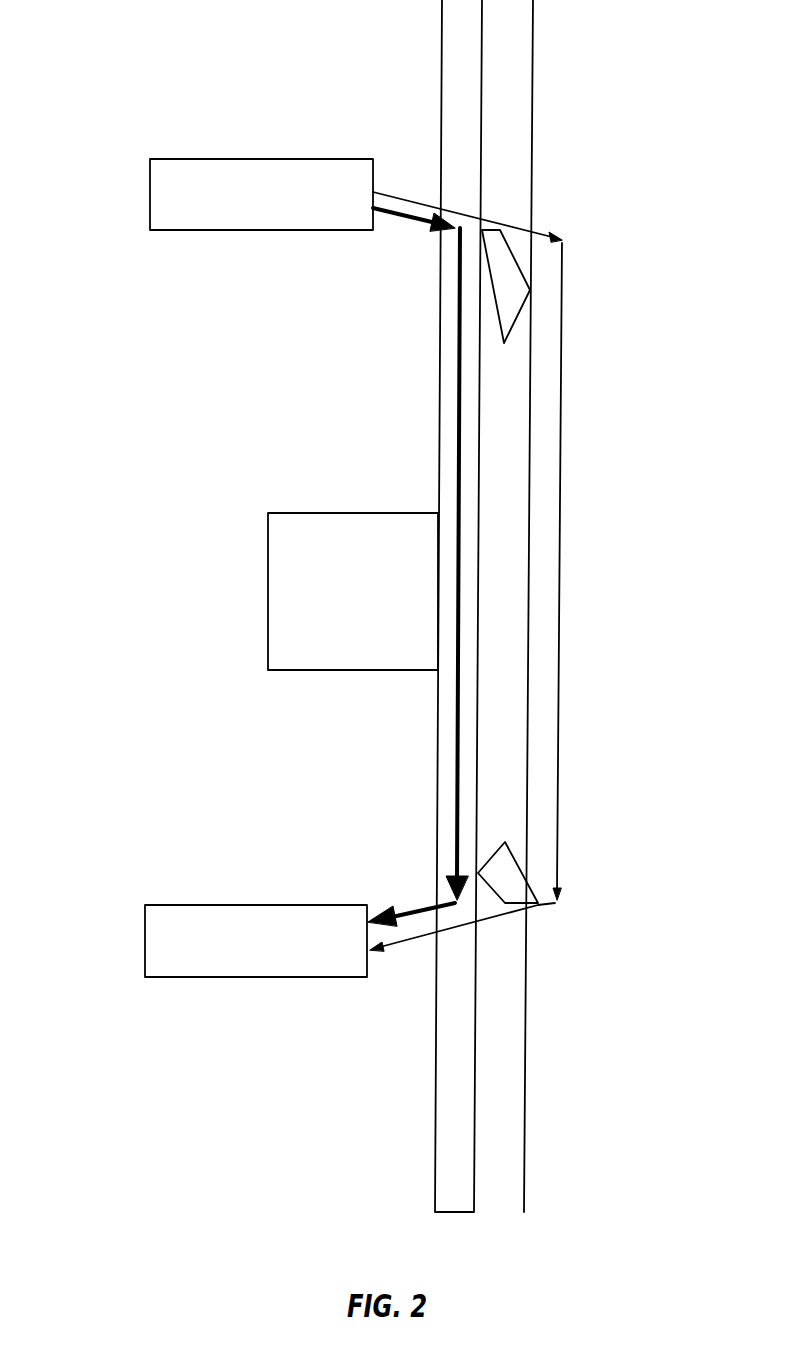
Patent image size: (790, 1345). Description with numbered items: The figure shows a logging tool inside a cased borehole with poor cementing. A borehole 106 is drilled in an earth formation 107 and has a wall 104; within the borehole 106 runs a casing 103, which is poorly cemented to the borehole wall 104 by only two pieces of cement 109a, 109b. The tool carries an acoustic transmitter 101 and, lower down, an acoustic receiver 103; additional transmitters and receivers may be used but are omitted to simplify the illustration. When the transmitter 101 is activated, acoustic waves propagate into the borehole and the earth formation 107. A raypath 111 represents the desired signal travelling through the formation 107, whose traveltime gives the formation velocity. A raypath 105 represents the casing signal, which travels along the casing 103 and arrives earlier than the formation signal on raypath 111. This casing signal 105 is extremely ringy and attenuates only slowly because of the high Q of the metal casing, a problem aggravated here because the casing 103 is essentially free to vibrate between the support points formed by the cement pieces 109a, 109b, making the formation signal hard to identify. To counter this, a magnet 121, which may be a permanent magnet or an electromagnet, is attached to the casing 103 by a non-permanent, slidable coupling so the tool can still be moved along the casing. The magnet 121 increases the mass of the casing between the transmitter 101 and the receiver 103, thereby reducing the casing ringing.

The acoustic transmitter 101 is at (178, 158).
The casing 103 is at (455, 60).
The borehole wall 104 is at (533, 45).
The raypath (casing signal) 105 is at (458, 365).
The borehole 106 is at (265, 23).
The earth formation 107 is at (627, 171).
The piece of cement 109a is at (515, 290).
The piece of cement 109b is at (512, 887).
The raypath (formation signal) 111 is at (560, 453).
The magnet 121 is at (300, 513).